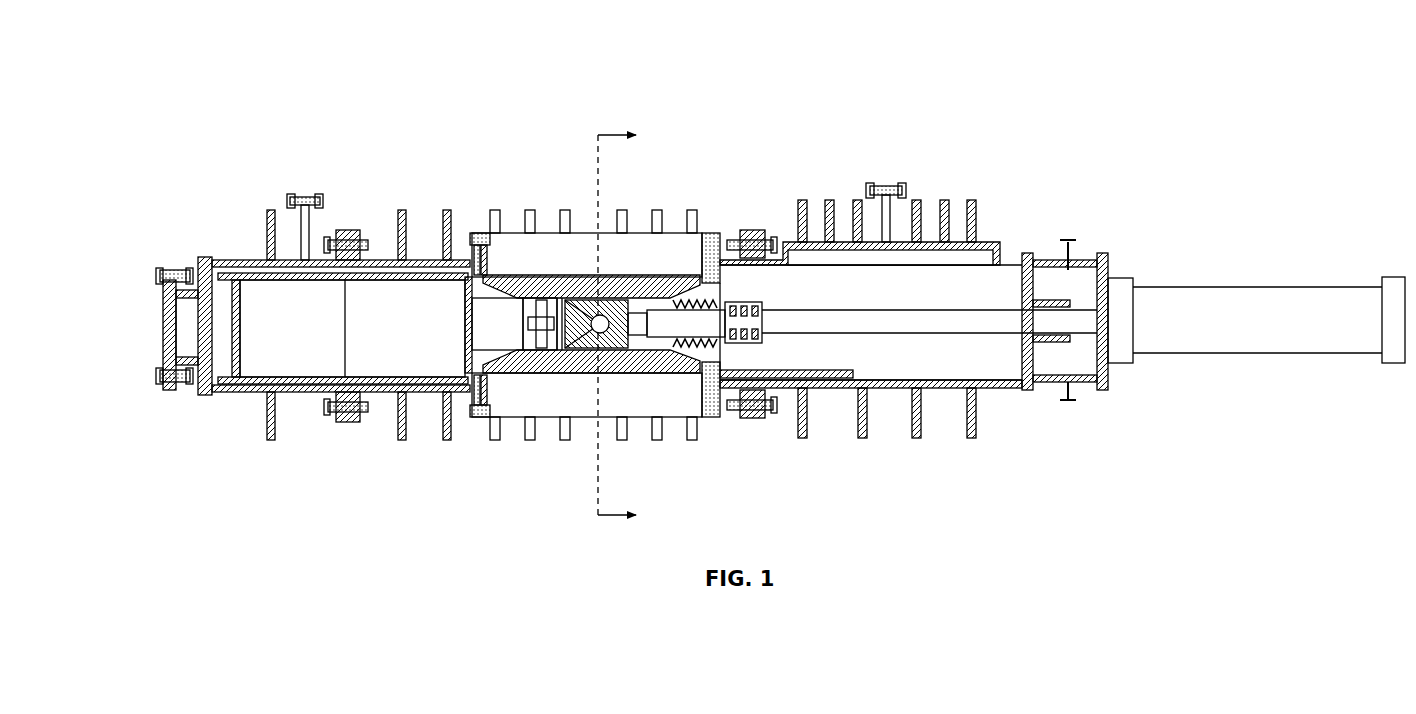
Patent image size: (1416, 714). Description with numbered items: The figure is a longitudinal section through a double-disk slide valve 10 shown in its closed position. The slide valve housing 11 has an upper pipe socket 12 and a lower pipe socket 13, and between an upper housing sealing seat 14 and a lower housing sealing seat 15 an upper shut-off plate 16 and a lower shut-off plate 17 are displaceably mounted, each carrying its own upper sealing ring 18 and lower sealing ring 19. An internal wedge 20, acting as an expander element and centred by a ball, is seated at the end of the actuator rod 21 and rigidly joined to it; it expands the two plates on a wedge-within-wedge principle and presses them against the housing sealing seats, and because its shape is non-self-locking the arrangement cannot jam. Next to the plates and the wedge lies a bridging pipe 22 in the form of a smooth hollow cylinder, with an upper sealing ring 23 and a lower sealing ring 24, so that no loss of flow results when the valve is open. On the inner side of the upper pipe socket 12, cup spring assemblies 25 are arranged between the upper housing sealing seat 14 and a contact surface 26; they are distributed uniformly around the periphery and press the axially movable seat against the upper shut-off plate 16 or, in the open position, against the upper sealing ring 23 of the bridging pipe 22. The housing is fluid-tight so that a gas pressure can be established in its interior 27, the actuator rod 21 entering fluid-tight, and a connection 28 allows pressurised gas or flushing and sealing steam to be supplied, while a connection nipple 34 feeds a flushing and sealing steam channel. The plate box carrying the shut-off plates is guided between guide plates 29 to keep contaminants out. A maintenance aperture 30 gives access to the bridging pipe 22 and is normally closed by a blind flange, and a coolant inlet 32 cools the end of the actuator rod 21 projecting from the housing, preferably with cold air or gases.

The double-disk slide valve 10 is at (185, 132).
The slide valve housing 11 is at (980, 242).
The upper pipe socket 12 is at (462, 240).
The lower pipe socket 13 is at (463, 410).
The upper housing sealing seat 14 is at (500, 262).
The lower housing sealing seat 15 is at (495, 391).
The upper shut-off plate 16 is at (690, 266).
The lower shut-off plate 17 is at (612, 376).
The upper sealing ring 18 is at (478, 290).
The lower sealing ring 19 is at (466, 372).
The internal wedge 20 is at (608, 300).
The actuator rod 21 is at (870, 325).
The bridging pipe 22 is at (283, 355).
The upper sealing ring 23 is at (228, 276).
The lower sealing ring 24 is at (226, 378).
The cup spring assemblies 25 is at (477, 232).
The contact surface 26 is at (485, 235).
The interior 27 is at (1003, 275).
The connection 28 is at (890, 185).
The guide plates 29 is at (405, 381).
The maintenance aperture 30 is at (160, 348).
The coolant inlet 32 is at (1072, 240).
The connection nipple 34 is at (497, 236).